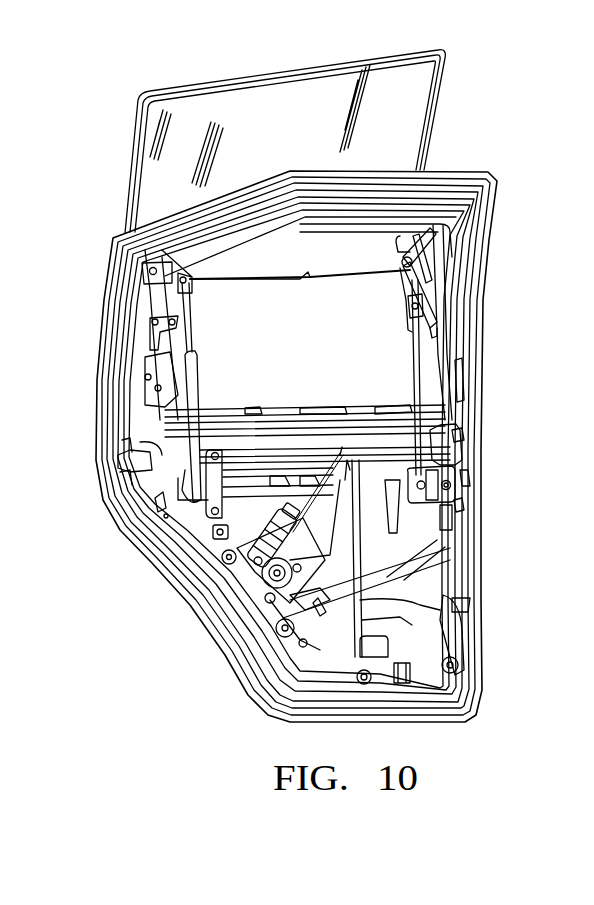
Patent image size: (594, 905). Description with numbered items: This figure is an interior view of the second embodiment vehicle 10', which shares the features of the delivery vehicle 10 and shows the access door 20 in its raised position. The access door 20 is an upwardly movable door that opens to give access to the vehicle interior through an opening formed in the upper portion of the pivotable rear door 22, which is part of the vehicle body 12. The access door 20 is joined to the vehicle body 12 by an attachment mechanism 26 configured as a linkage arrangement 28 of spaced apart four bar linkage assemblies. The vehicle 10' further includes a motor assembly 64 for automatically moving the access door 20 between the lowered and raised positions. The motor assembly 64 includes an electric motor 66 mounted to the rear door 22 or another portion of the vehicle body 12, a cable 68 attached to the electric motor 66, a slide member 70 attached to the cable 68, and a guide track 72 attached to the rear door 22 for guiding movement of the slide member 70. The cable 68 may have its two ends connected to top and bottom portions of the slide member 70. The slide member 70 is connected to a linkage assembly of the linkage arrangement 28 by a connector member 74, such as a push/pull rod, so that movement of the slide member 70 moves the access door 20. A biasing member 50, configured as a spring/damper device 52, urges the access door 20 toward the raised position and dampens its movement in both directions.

The delivery vehicle 10 is at (315, 399).
The vehicle 10' is at (315, 399).
The vehicle body 12 is at (344, 432).
The rear door 22 is at (497, 190).
The access door 20 is at (426, 87).
The attachment mechanism 26 is at (376, 350).
The linkage arrangement 28 is at (407, 296).
The connector member 74 is at (413, 306).
The biasing member 50 is at (307, 483).
The spring/damper device 52 is at (209, 388).
The slide member 70 is at (455, 494).
The cable 68 is at (305, 498).
The electric motor 66 is at (252, 553).
The motor assembly 64 is at (272, 585).
The guide track 72 is at (478, 631).